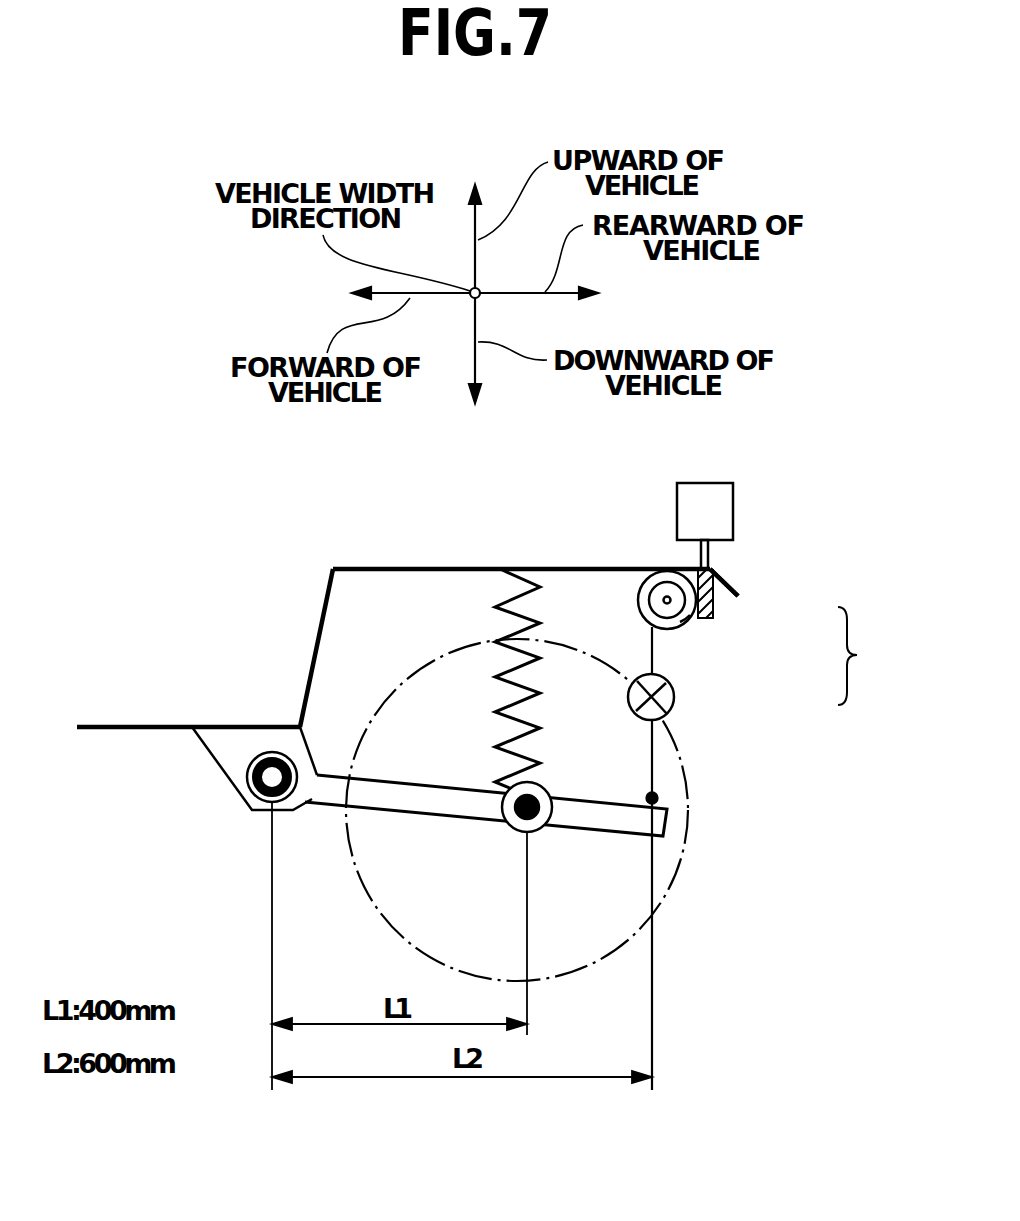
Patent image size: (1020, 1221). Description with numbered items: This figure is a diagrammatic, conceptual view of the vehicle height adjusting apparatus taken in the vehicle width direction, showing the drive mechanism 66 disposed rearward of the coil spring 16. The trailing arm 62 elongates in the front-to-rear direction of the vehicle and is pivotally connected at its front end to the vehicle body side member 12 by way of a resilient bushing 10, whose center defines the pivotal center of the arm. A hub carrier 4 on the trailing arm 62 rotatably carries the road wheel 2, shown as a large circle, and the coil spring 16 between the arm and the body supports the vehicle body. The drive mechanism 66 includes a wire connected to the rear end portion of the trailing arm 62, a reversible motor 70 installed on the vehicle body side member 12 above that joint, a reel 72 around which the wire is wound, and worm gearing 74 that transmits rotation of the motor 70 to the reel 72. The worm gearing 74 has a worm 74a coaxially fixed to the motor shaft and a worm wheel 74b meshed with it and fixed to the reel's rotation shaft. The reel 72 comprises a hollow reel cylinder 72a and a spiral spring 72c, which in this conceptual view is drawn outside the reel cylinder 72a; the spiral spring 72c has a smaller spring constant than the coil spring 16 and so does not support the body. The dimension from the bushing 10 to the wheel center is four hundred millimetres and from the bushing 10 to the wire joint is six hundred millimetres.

The road wheel 2 is at (687, 843).
The hub carrier 4 is at (540, 828).
The resilient bushing 10 is at (247, 775).
The vehicle body side member 12 is at (315, 648).
The coil spring 16 is at (502, 600).
The trailing arm 62 is at (375, 798).
The drive mechanism 66 is at (745, 569).
The reversible motor 70 is at (725, 512).
The reel 72 is at (622, 599).
The reel cylinder 72a is at (662, 580).
The spiral spring 72c is at (675, 698).
The worm gearing 74 is at (873, 656).
The worm 74a is at (715, 603).
The worm wheel 74b is at (680, 622).